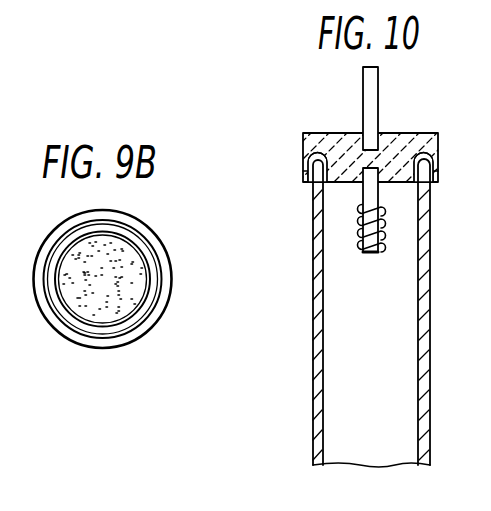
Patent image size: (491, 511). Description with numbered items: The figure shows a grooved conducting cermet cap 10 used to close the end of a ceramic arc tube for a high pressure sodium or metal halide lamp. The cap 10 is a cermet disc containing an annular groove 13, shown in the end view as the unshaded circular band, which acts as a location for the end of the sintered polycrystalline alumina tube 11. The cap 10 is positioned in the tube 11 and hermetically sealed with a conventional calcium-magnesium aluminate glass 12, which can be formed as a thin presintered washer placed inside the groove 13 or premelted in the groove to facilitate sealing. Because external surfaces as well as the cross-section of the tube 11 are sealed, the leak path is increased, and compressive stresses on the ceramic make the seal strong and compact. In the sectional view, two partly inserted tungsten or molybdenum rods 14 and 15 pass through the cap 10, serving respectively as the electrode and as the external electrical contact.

In FIG. 9B, the grooved conducting cermet cap 10 is at (158, 232).
In FIG. 10, the grooved conducting cermet cap 10 is at (303, 146).
In FIG. 10, the sintered polycrystalline alumina tube 11 is at (313, 300).
In FIG. 10, the calcium-magnesium aluminate glass 12 is at (311, 167).
In FIG. 9B, the groove 13 is at (50, 283).
In FIG. 10, the tungsten or molybdenum rod 14 is at (381, 252).
In FIG. 10, the tungsten or molybdenum rod 15 is at (379, 97).